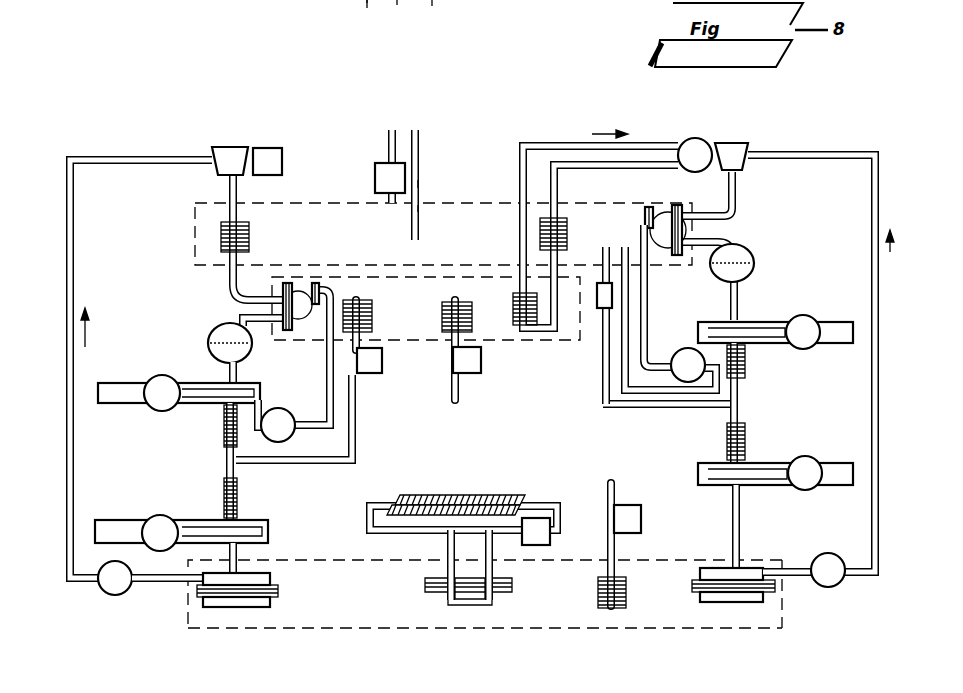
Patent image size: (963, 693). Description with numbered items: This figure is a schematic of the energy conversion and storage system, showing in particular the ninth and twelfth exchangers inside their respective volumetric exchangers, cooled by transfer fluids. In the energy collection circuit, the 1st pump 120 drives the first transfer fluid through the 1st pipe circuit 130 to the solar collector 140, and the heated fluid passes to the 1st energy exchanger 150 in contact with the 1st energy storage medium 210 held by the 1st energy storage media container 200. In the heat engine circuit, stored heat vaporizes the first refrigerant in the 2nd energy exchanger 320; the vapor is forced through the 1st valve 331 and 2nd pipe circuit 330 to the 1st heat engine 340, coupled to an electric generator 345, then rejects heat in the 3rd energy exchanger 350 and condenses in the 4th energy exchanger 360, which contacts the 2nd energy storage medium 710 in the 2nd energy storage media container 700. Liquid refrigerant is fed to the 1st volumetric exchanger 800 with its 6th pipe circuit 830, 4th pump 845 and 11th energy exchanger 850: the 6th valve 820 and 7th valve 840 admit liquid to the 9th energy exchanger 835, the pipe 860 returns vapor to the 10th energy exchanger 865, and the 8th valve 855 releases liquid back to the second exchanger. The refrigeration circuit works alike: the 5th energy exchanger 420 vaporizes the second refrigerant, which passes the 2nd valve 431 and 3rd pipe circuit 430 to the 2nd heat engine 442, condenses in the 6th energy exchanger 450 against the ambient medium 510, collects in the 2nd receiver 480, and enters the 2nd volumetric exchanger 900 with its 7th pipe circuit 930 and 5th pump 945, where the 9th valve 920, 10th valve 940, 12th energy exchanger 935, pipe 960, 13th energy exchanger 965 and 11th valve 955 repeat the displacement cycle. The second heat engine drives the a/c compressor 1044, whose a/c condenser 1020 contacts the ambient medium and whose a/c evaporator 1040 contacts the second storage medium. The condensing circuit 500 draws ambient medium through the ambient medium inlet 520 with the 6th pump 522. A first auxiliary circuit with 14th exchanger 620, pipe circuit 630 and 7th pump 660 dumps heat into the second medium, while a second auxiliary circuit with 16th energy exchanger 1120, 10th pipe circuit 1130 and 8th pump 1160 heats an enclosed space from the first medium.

The 1st pump 120 is at (530, 550).
The 1st pipe circuit 130 is at (560, 510).
The solar collector 140 is at (452, 497).
The 1st energy exchanger 150 is at (425, 595).
The 1st energy storage media container 200 is at (782, 610).
The 1st energy storage medium 210 is at (677, 618).
The 2nd energy exchanger 320 is at (200, 590).
The 2nd pipe circuit 330 is at (143, 158).
The 1st valve 331 is at (128, 596).
The 1st heat engine 340 is at (230, 147).
The electric generator 345 is at (283, 164).
The 3rd energy exchanger 350 is at (222, 238).
The 4th energy exchanger 360 is at (292, 283).
The 5th energy exchanger 420 is at (777, 588).
The 3rd pipe circuit 430 is at (743, 527).
The 2nd valve 431 is at (830, 588).
The 2nd heat engine 442 is at (728, 143).
The 6th energy exchanger 450 is at (680, 206).
The 2nd receiver 480 is at (760, 272).
The condensing circuit 500 is at (420, 175).
The ambient medium 510 is at (283, 205).
The ambient medium inlet 520 is at (387, 150).
The 6th pump 522 is at (375, 175).
The 14th exchanger 620 is at (397, 0).
The pipe circuit 630 is at (332, 8).
The 7th pump 660 is at (483, 372).
The 2nd energy storage media container 700 is at (440, 180).
The 2nd energy storage medium 710 is at (455, 208).
The 1st volumetric exchanger 800 is at (227, 463).
The 6th valve 820 is at (162, 376).
The 6th pipe circuit 830 is at (282, 468).
The 9th energy exchanger 835 is at (227, 430).
The 7th valve 840 is at (148, 517).
The 4th pump 845 is at (385, 372).
The 11th energy exchanger 850 is at (405, 312).
The 8th valve 855 is at (280, 410).
The pipe 860 is at (323, 348).
The 10th energy exchanger 865 is at (318, 282).
The 2nd volumetric exchanger 900 is at (752, 432).
The 9th valve 920 is at (795, 315).
The 7th pipe circuit 930 is at (685, 408).
The 12th energy exchanger 935 is at (748, 388).
The 10th valve 940 is at (797, 456).
The 5th pump 945 is at (600, 300).
The 11th valve 955 is at (672, 352).
The pipe 960 is at (648, 297).
The 13th energy exchanger 965 is at (643, 210).
The a/c condenser 1020 is at (602, 237).
The a/c evaporator 1040 is at (513, 308).
The a/c compressor 1044 is at (696, 140).
The 16th energy exchanger 1120 is at (600, 595).
The 10th pipe circuit 1130 is at (437, 304).
The 8th pump 1160 is at (640, 522).